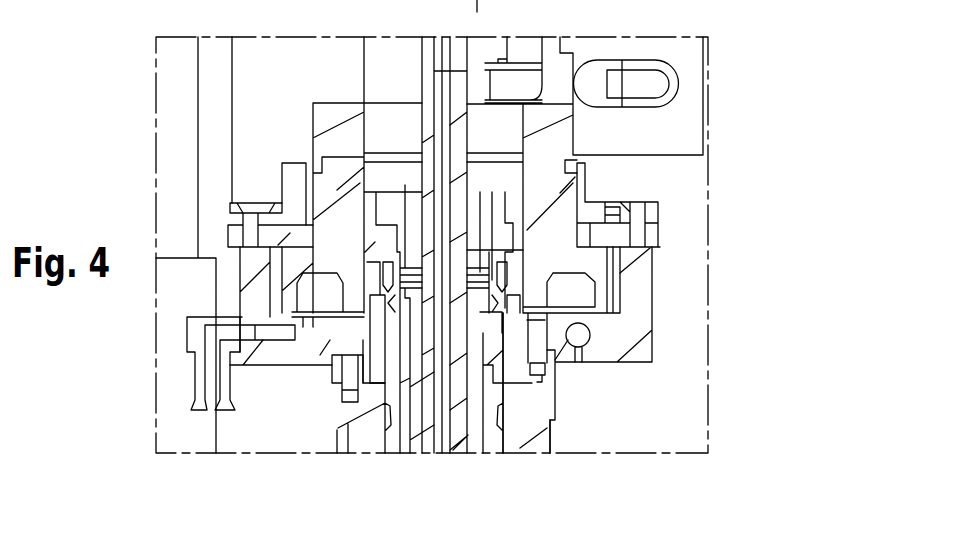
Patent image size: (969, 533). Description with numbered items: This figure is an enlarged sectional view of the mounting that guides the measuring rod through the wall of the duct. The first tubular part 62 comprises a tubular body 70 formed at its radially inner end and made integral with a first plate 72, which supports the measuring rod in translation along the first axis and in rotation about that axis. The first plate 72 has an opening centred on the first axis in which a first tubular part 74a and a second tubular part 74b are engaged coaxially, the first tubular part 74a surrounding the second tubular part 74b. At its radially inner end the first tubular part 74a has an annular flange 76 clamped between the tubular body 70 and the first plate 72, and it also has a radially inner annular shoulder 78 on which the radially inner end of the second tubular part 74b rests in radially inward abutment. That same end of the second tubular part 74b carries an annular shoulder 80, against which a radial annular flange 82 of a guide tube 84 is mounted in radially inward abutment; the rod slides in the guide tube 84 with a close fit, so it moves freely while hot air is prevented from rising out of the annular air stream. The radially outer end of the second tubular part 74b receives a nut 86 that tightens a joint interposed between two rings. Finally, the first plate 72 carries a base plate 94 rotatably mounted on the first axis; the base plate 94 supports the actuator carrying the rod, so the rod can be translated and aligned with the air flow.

The first tubular part 62 is at (558, 434).
The tubular body 70 is at (543, 403).
The first plate 72 is at (632, 333).
The first tubular part 74a is at (328, 375).
The second tubular part 74b is at (516, 310).
The annular flange 76 is at (555, 370).
The radially inner annular shoulder 78 is at (386, 398).
The annular shoulder 80 is at (378, 316).
The radial annular flange 82 is at (483, 303).
The guide tube 84 is at (470, 397).
The nut 86 is at (392, 205).
The base plate 94 is at (563, 133).